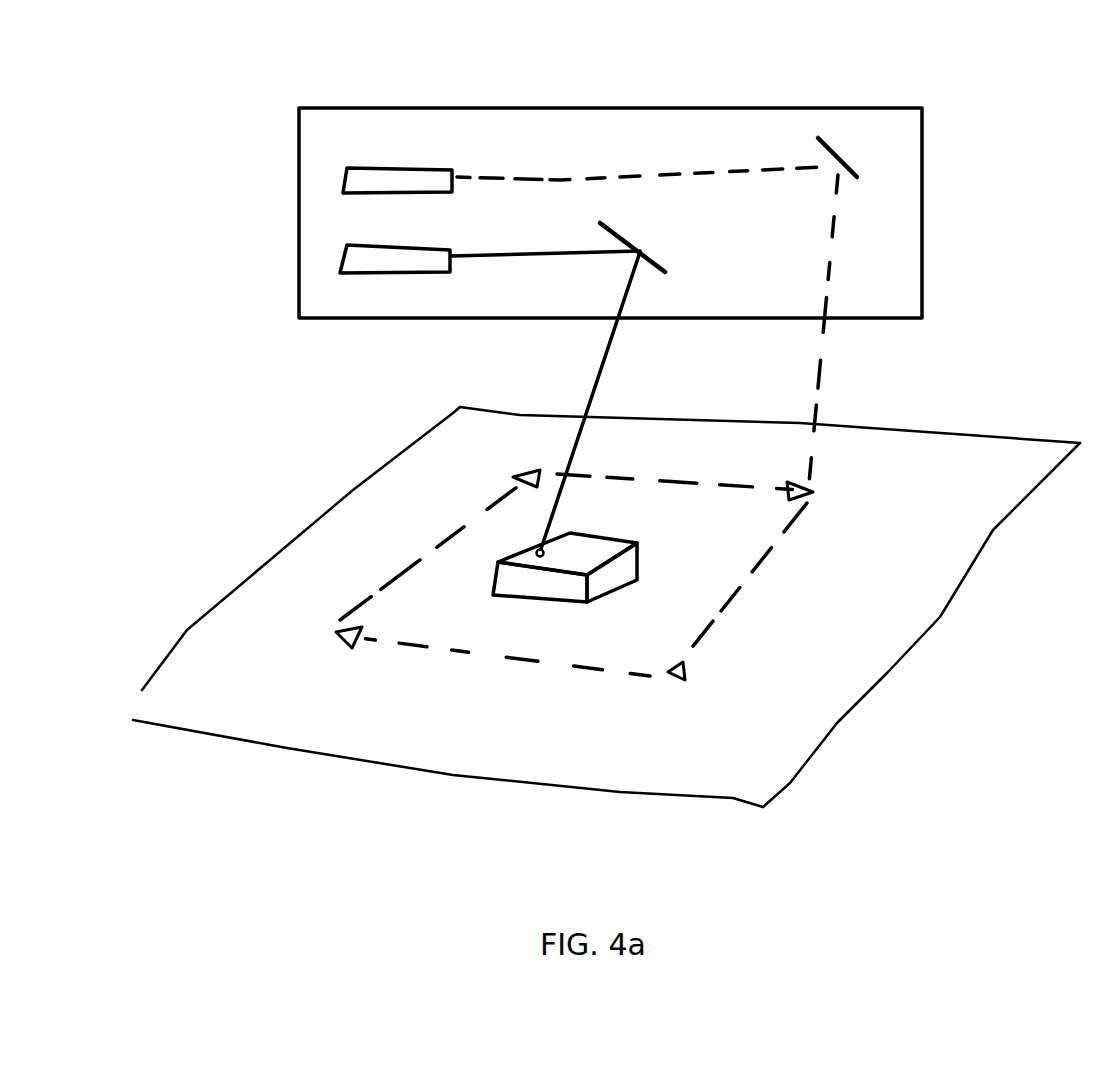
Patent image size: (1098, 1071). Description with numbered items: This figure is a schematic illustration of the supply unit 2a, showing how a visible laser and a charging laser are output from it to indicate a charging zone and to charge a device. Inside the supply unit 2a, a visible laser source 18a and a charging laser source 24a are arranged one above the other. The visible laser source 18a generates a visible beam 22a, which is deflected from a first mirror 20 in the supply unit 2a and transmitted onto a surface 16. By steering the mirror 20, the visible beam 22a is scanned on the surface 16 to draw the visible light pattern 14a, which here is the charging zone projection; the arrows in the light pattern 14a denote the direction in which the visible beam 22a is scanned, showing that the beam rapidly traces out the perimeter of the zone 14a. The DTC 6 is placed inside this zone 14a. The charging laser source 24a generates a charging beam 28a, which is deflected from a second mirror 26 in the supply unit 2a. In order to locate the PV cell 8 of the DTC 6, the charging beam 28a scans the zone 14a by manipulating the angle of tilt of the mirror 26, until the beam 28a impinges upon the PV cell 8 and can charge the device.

The supply unit 2a is at (299, 108).
The visible laser source 18a is at (343, 183).
The charging laser source 24a is at (341, 258).
The first mirror 20 is at (827, 147).
The second mirror 26 is at (665, 268).
The visible beam 22a is at (813, 410).
The charging beam 28a is at (600, 380).
The surface 16 is at (847, 641).
The visible light pattern 14a is at (450, 648).
The DTC 6 is at (632, 560).
The PV cell 8 is at (538, 553).